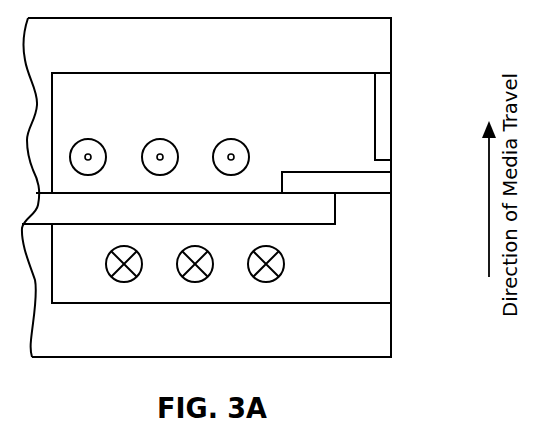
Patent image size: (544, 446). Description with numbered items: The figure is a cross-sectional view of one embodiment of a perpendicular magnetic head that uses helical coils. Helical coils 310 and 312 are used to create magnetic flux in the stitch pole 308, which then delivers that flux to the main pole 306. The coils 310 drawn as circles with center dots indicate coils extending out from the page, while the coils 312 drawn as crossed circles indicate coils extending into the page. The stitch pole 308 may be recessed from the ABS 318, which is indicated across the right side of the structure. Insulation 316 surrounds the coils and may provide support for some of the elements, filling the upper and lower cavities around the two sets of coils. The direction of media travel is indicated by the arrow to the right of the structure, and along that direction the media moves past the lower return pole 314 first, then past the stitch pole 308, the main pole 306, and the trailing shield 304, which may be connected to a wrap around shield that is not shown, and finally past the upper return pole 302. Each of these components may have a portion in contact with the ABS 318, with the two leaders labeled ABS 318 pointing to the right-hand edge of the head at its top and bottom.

The upper return pole 302 is at (297, 57).
The trailing shield 304 is at (391, 120).
The main pole 306 is at (391, 177).
The stitch pole 308 is at (240, 220).
The helical coils 310 is at (84, 139).
The helical coils 312 is at (106, 268).
The lower return pole 314 is at (240, 342).
The insulation 316 is at (335, 129).
The ABS 318 is at (403, 37).